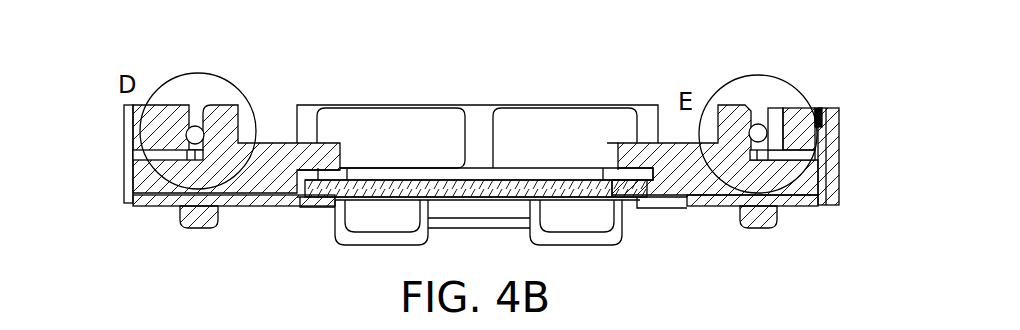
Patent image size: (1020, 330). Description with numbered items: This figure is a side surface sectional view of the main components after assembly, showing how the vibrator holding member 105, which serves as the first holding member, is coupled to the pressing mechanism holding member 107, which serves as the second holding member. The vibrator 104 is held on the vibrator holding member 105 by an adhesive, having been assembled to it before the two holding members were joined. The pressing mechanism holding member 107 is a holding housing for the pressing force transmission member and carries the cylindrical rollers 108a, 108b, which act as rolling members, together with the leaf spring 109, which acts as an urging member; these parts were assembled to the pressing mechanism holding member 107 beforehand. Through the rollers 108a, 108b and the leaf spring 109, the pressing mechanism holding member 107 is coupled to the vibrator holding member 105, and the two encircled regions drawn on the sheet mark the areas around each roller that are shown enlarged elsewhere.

The vibrator 104 is at (635, 212).
The vibrator holding member 105 is at (813, 177).
The pressing mechanism holding member 107 is at (802, 108).
The cylindrical roller 108a is at (192, 137).
The cylindrical roller 108b is at (759, 126).
The leaf spring 109 is at (776, 108).